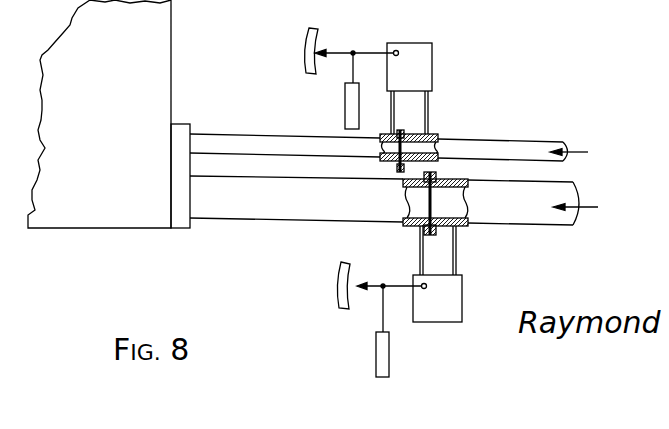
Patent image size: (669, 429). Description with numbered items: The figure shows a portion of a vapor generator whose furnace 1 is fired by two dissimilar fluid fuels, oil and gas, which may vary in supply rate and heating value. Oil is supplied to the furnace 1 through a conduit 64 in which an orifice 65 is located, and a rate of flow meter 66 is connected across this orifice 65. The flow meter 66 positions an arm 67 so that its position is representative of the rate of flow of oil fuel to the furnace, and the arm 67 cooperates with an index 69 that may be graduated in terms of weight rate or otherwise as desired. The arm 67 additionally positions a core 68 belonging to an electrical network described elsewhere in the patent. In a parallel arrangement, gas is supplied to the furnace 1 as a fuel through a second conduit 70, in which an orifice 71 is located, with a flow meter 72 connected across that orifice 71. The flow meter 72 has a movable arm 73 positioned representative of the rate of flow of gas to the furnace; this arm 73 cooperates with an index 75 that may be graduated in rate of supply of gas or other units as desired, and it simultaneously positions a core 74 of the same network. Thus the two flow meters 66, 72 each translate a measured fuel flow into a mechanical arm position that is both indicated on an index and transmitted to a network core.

The furnace 1 is at (98, 112).
The conduit 64 is at (515, 141).
The orifice 65 is at (398, 153).
The rate of flow meter 66 is at (432, 48).
The arm 67 is at (344, 52).
The core 68 is at (345, 110).
The index 69 is at (305, 35).
The conduit 70 is at (525, 226).
The orifice 71 is at (436, 197).
The flow meter 72 is at (442, 323).
The movable arm 73 is at (381, 285).
The core 74 is at (376, 347).
The index 75 is at (339, 268).